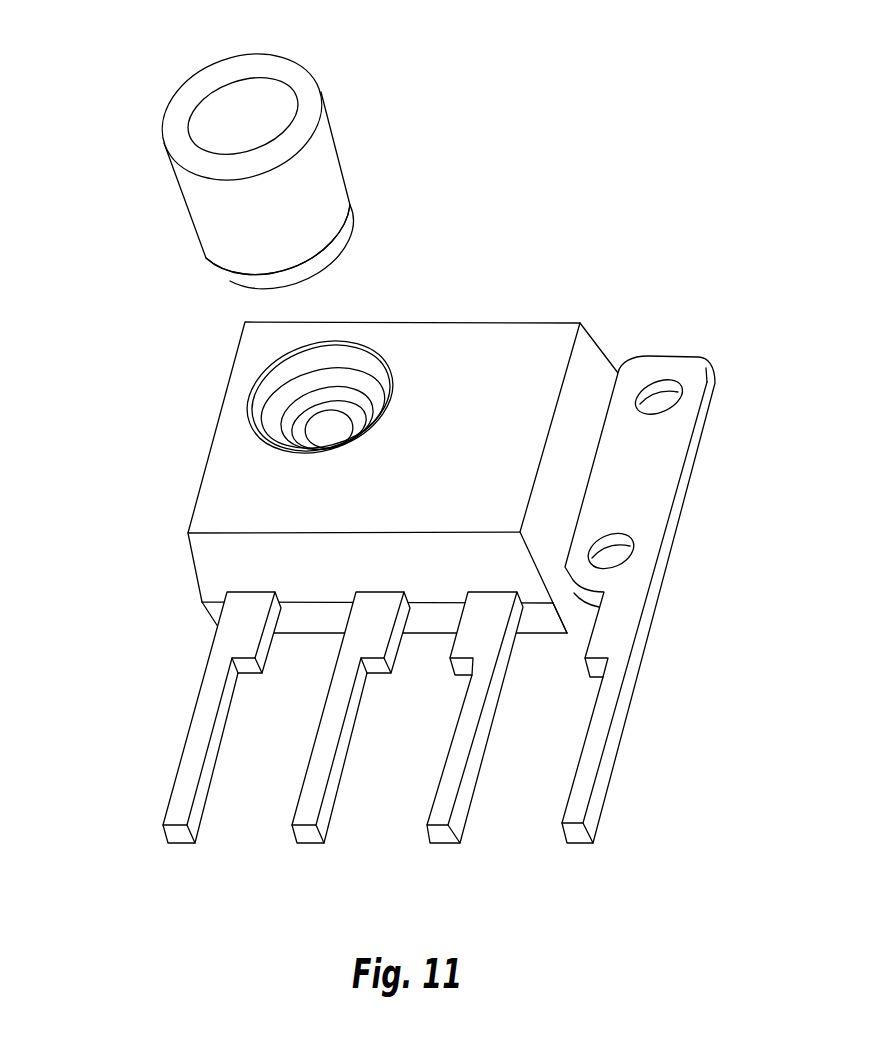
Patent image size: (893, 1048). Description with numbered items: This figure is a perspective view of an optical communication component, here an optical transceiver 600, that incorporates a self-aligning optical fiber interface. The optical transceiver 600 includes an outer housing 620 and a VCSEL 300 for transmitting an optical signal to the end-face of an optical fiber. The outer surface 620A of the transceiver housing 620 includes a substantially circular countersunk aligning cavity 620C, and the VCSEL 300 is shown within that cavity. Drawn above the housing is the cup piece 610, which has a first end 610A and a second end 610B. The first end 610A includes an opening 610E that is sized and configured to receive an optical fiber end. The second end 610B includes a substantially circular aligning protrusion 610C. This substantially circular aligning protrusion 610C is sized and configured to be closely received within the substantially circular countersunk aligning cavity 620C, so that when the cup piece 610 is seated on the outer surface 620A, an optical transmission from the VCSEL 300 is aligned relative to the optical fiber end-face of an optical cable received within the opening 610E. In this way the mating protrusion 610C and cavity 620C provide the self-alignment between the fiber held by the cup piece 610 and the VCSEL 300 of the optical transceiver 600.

The optical transceiver 600 is at (611, 220).
The cup piece 610 is at (340, 143).
The first end 610A is at (300, 88).
The second end 610B is at (210, 262).
The substantially circular aligning protrusion 610C is at (347, 270).
The opening 610E is at (242, 115).
The outer housing 620 is at (598, 352).
The outer surface 620A is at (492, 340).
The substantially circular countersunk aligning cavity 620C is at (357, 343).
The VCSEL 300 is at (350, 420).